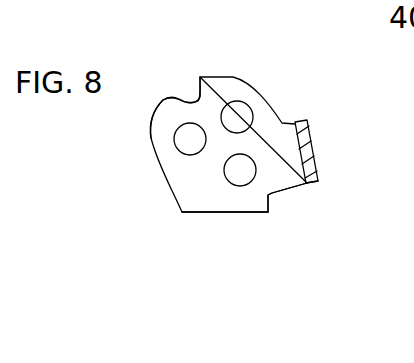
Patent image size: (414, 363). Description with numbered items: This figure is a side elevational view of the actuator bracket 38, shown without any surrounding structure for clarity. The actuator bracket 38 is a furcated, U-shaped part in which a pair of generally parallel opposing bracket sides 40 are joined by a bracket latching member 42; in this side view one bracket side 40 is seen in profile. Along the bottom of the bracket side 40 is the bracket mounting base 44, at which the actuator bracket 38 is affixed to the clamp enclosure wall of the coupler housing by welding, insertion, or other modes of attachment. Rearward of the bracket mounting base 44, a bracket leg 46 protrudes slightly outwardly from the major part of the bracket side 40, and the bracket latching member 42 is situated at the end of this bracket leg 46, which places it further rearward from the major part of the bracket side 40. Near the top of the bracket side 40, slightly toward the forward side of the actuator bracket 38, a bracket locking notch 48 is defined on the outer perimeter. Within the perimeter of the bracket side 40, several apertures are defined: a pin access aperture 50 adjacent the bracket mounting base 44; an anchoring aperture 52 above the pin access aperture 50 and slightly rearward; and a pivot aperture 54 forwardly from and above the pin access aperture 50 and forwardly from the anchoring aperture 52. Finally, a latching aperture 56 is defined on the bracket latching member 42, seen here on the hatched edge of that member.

The actuator bracket 38 is at (181, 187).
The bracket side 40 is at (200, 194).
The bracket latching member 42 is at (320, 170).
The bracket mounting base 44 is at (240, 212).
The bracket leg 46 is at (290, 190).
The bracket locking notch 48 is at (183, 102).
The pin access aperture 50 is at (224, 170).
The anchoring aperture 52 is at (246, 101).
The pivot aperture 54 is at (174, 133).
The latching aperture 56 is at (312, 145).